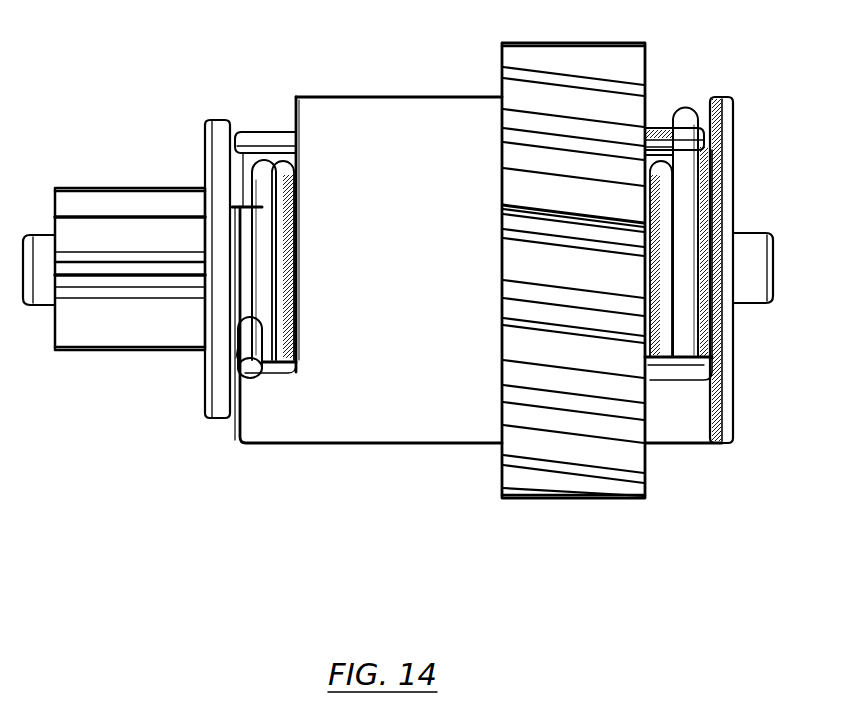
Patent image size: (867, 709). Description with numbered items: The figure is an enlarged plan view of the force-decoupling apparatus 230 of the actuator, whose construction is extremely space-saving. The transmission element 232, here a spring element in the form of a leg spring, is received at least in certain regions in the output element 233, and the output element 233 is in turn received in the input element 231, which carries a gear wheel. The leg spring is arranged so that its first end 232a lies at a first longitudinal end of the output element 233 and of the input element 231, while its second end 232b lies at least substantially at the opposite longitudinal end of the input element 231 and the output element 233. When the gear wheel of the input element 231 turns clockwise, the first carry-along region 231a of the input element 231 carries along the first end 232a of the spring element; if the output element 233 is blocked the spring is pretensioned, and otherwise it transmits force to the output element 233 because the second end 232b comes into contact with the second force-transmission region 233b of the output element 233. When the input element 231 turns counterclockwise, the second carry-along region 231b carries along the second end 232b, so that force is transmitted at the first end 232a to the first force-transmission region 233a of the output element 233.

The force-decoupling apparatus 230 is at (670, 569).
The input element 231 is at (402, 115).
The first carry-along region 231a is at (660, 136).
The second carry-along region 231b is at (270, 373).
The transmission element 232 is at (268, 167).
The first end of the leg spring 232a is at (688, 118).
The second end of the leg spring 232b is at (243, 371).
The output element 233 is at (108, 203).
The first force-transmission region 233a is at (685, 163).
The second force-transmission region 233b is at (279, 369).